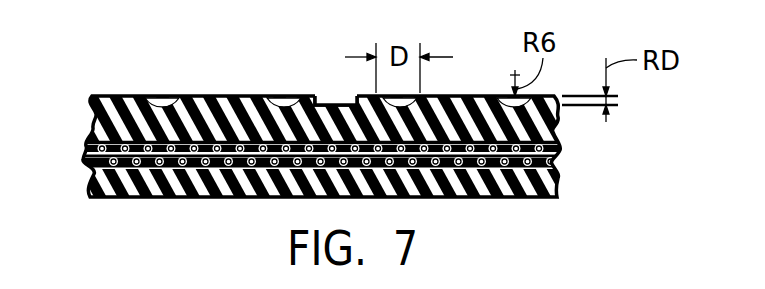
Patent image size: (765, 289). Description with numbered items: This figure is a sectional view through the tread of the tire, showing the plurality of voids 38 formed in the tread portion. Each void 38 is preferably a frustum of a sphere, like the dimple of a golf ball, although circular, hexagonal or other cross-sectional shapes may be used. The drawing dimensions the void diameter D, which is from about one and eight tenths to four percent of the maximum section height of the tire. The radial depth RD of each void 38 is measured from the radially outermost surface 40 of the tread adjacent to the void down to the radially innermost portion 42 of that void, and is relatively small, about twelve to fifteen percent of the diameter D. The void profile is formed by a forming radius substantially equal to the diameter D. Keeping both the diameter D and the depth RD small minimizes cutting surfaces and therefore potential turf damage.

The voids 38 is at (278, 103).
The radially outermost surface 40 is at (326, 103).
The radially innermost portion 42 is at (100, 132).